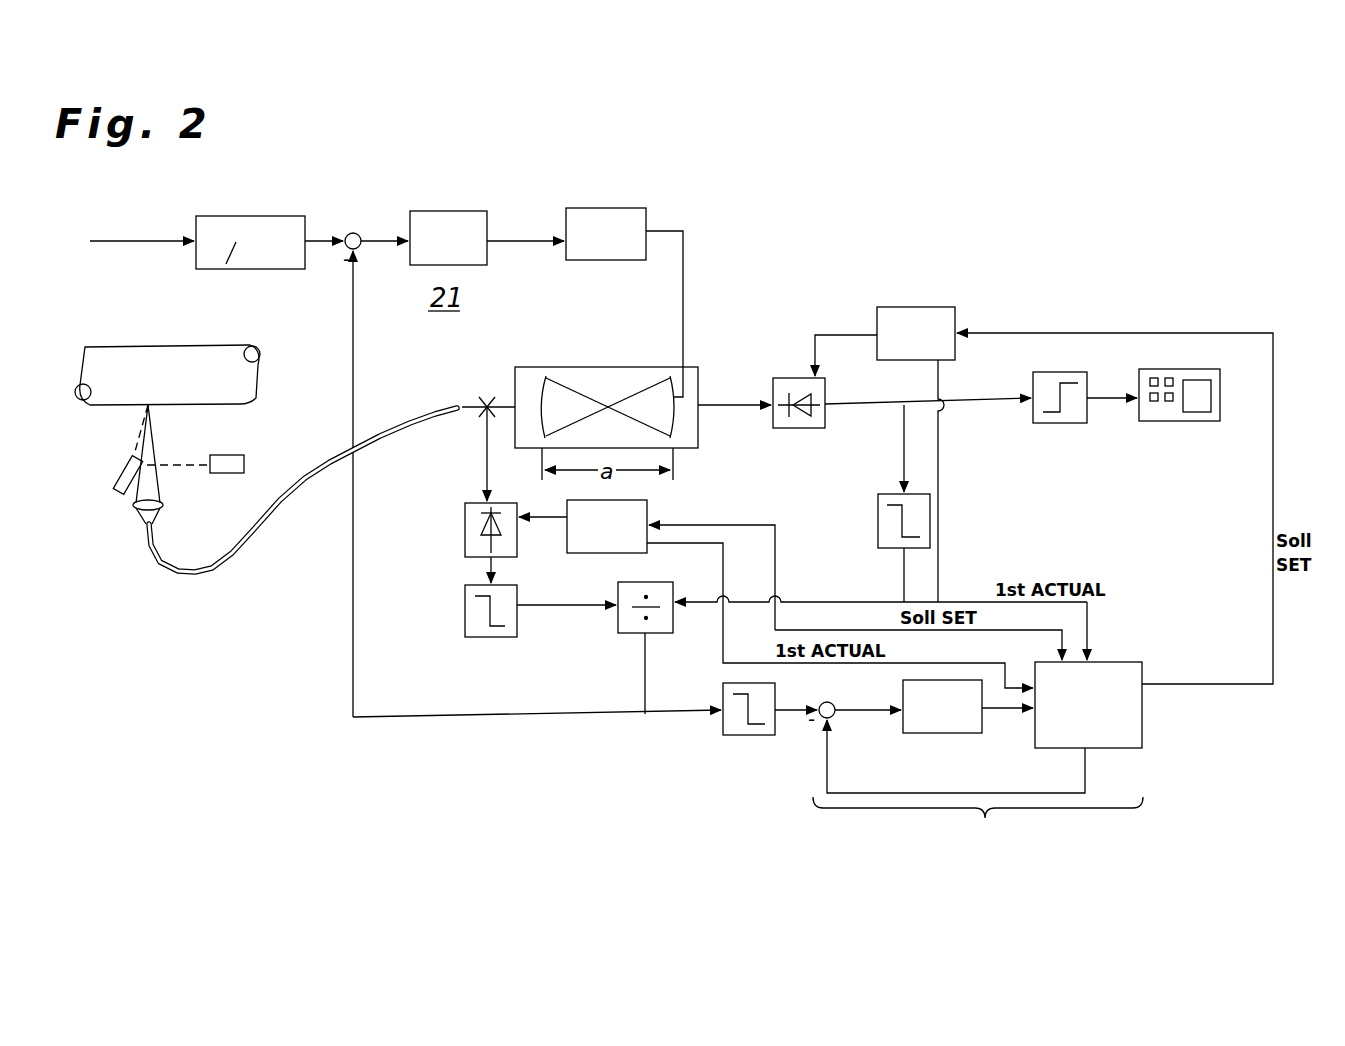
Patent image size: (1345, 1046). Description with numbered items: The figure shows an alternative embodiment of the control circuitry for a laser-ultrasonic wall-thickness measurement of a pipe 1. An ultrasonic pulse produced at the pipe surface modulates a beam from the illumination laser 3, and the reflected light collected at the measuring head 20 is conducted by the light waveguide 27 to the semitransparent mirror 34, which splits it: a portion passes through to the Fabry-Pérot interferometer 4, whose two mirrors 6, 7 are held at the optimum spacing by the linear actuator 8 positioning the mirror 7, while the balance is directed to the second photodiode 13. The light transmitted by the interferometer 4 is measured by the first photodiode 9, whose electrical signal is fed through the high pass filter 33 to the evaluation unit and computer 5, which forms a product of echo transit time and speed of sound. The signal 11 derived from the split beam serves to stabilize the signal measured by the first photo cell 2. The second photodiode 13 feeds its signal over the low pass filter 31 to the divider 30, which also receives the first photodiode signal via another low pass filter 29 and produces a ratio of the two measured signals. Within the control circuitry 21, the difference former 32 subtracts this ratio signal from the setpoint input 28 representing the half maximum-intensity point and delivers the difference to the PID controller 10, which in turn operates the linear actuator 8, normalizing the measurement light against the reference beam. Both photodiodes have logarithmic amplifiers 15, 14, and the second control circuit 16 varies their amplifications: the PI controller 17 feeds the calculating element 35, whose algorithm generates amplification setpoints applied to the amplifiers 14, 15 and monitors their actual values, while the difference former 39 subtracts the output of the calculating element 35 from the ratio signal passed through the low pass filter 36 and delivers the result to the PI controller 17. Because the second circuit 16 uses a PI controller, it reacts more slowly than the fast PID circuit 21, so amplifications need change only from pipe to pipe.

The pipe 1 is at (157, 353).
The first photo cell 2 is at (121, 466).
The illumination laser 3 is at (226, 455).
The Fabry-Pérot interferometer 4 is at (597, 380).
The evaluation unit and computer 5 is at (1180, 422).
The mirror 6 is at (541, 376).
The mirror 7 is at (672, 376).
The linear actuator 8 is at (610, 215).
The first photodiode 9 is at (798, 378).
The PID controller 10 is at (452, 213).
The signal 11 is at (484, 448).
The second photodiode 13 is at (465, 536).
The amplifier 14 is at (582, 554).
The amplifier 15 is at (917, 308).
The second control circuit 16 is at (978, 825).
The PI controller 17 is at (915, 733).
The measuring head 20 is at (218, 533).
The control circuitry 21 is at (460, 311).
The light waveguide 27 is at (234, 550).
The setpoint input 28 is at (239, 218).
The low pass filter 29 is at (880, 495).
The divider 30 is at (630, 634).
The low pass filter 31 is at (465, 611).
The difference former 32 is at (357, 232).
The high pass filter 33 is at (1072, 424).
The semitransparent mirror 34 is at (487, 404).
The calculating element 35 is at (1135, 728).
The low pass filter 36 is at (735, 736).
The difference former 39 is at (833, 703).